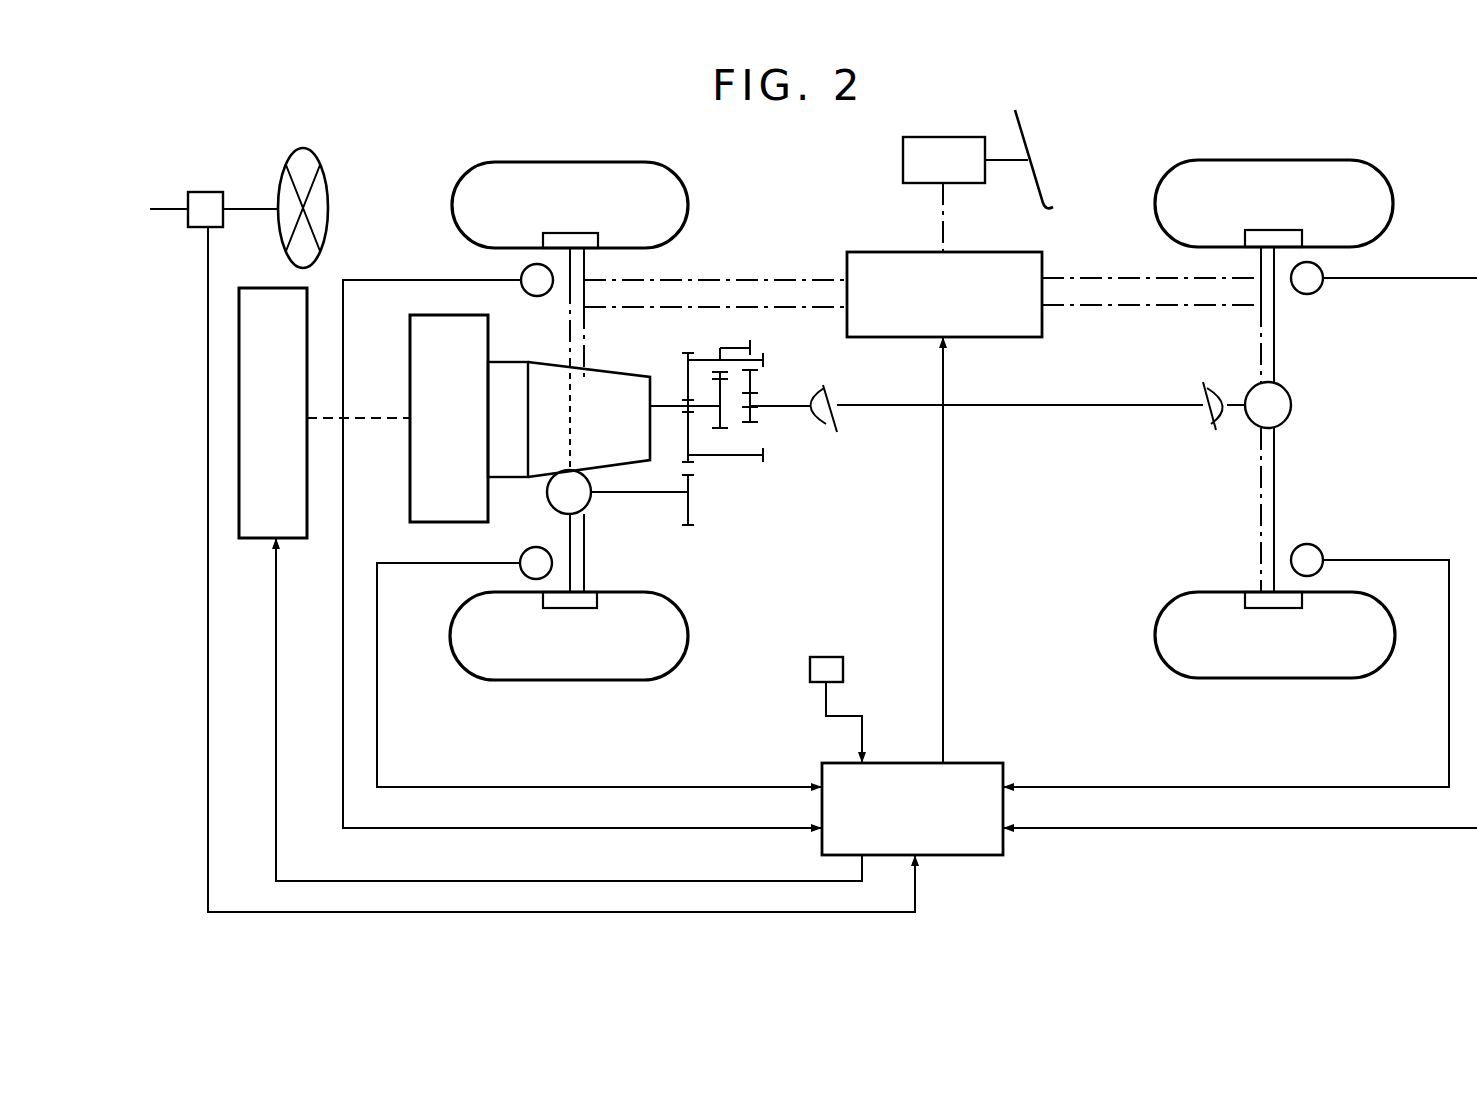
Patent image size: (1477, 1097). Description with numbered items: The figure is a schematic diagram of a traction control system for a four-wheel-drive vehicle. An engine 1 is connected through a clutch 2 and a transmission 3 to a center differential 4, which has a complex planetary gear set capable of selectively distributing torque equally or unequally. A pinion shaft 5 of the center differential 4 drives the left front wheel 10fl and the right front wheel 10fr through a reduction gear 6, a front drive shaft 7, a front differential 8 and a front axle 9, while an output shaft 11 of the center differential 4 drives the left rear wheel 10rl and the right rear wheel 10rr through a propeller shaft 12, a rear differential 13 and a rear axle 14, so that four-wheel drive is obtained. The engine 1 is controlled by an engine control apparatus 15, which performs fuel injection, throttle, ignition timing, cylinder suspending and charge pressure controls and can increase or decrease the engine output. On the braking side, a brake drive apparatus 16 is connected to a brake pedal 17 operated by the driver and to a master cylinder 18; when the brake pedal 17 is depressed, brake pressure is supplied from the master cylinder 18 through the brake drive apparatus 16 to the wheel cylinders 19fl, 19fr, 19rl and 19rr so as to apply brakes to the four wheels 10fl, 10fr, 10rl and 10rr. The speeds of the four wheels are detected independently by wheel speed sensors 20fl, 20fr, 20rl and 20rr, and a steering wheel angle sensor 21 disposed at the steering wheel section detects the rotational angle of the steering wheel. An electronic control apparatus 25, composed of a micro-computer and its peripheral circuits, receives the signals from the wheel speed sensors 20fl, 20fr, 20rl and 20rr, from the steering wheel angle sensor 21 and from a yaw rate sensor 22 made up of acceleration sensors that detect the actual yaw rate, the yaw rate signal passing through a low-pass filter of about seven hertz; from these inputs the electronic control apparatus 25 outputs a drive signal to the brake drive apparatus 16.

The engine 1 is at (410, 358).
The clutch 2 is at (515, 362).
The transmission 3 is at (622, 376).
The center differential 4 is at (718, 460).
The pinion shaft 5 is at (738, 457).
The reduction gear 6 is at (690, 510).
The front drive shaft 7 is at (632, 493).
The front differential 8 is at (590, 506).
The front axle 9 is at (585, 553).
The right front wheel 10fr is at (577, 162).
The left front wheel 10fl is at (575, 680).
The right rear wheel 10rr is at (1255, 160).
The left rear wheel 10rl is at (1272, 678).
The output shaft 11 is at (783, 405).
The propeller shaft 12 is at (1043, 405).
The rear differential 13 is at (1290, 394).
The rear axle 14 is at (1275, 456).
The engine control apparatus 15 is at (265, 288).
The brake drive apparatus 16 is at (912, 252).
The brake pedal 17 is at (1031, 140).
The master cylinder 18 is at (942, 137).
The wheel cylinder for right front wheel 19fr is at (569, 233).
The wheel cylinder for left front wheel 19fl is at (569, 608).
The wheel cylinder for right rear wheel 19rr is at (1283, 230).
The wheel cylinder for left rear wheel 19rl is at (1275, 608).
The wheel speed sensor for right front wheel 20fr is at (524, 269).
The wheel speed sensor for left front wheel 20fl is at (520, 554).
The wheel speed sensor for right rear wheel 20rr is at (1318, 292).
The wheel speed sensor for left rear wheel 20rl is at (1307, 544).
The steering wheel angle sensor 21 is at (208, 192).
The yaw rate sensor 22 is at (830, 657).
The electronic control apparatus 25 is at (978, 763).